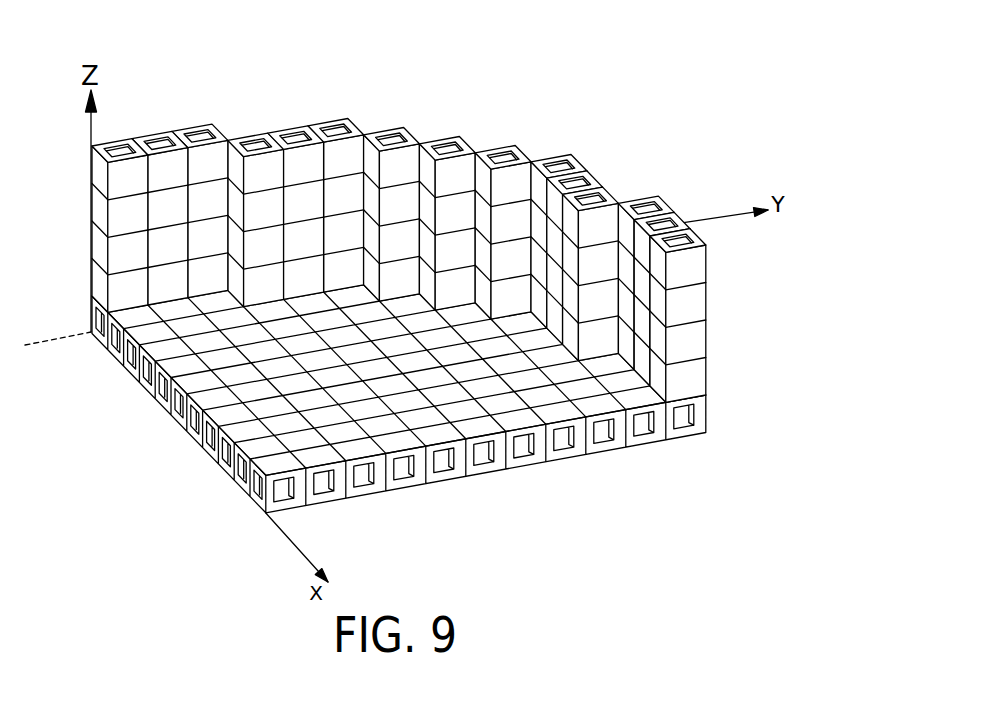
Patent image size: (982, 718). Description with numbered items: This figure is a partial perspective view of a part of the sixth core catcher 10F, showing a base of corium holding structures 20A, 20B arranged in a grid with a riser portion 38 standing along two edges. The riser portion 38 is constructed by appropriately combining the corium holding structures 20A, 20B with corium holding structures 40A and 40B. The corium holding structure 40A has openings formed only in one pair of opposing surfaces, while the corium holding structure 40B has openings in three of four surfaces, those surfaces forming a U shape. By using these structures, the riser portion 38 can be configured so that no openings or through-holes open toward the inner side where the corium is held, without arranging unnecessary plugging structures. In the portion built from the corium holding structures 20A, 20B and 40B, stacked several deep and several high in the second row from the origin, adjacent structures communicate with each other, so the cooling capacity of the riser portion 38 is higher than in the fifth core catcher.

The sixth core catcher 10F is at (356, 278).
The corium holding structure 20A is at (287, 125).
The corium holding structure 20B is at (415, 487).
The riser portion 38 is at (80, 238).
The corium holding structure 40A is at (493, 145).
The corium holding structure 40B is at (248, 132).